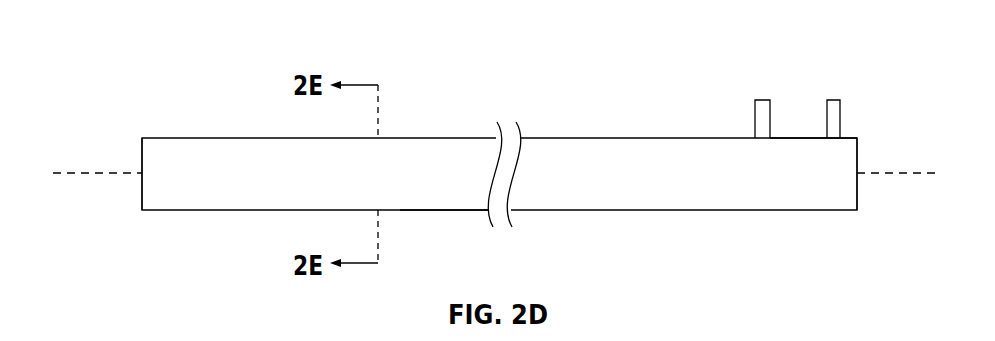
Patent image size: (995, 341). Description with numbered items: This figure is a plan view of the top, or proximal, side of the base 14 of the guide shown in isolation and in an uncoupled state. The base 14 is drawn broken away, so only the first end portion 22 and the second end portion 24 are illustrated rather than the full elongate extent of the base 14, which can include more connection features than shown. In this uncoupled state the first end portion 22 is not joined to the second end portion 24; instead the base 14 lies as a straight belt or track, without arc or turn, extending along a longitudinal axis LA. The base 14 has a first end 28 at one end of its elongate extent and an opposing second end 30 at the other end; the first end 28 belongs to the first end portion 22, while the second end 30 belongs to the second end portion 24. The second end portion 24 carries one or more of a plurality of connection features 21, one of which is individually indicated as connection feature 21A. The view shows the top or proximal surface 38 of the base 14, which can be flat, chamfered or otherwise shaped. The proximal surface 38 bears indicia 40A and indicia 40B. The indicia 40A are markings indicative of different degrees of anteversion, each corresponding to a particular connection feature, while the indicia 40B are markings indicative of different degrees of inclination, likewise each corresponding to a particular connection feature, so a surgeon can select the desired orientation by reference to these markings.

The base 14 is at (857, 53).
The first end portion 22 is at (158, 105).
The first end 28 is at (142, 145).
The second end 30 is at (857, 157).
The second end portion 24 is at (852, 125).
The plurality of connection features 21 is at (833, 100).
The connection feature 21A is at (833, 119).
The proximal surface 38 is at (480, 204).
The indicia 40A is at (477, 152).
The indicia 40B is at (775, 190).
The longitudinal axis LA is at (108, 173).